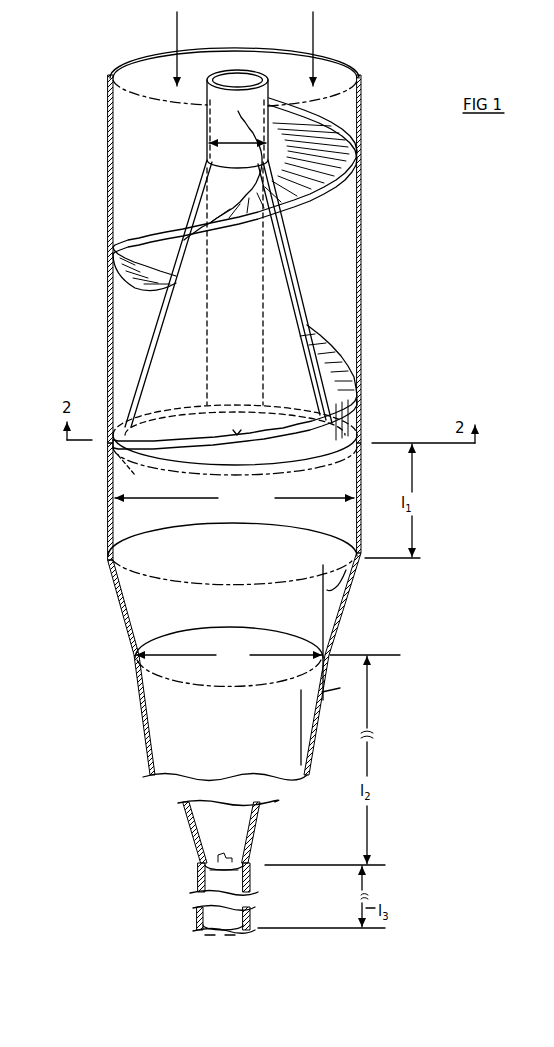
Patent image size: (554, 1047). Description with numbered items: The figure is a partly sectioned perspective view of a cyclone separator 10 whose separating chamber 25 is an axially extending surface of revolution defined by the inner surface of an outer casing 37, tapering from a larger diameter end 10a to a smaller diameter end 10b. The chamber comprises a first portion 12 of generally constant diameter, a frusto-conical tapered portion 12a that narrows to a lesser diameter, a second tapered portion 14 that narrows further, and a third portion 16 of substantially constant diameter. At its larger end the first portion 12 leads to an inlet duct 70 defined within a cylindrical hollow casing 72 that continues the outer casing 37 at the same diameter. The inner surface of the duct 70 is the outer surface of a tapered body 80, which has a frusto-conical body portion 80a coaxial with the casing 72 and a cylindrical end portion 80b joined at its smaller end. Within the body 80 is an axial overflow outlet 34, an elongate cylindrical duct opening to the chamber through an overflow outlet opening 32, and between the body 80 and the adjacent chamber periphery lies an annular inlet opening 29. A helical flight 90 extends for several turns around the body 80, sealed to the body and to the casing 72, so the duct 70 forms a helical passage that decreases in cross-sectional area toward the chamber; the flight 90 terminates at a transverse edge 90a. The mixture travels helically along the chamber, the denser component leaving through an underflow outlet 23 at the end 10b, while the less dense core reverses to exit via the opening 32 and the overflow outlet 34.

The separator 10 is at (367, 177).
The larger diameter end 10a is at (356, 452).
The smaller diameter end 10b is at (243, 920).
The first portion 12 is at (357, 491).
The tapered portion 12a is at (343, 612).
The second tapered portion 14 is at (312, 714).
The third portion 16 is at (251, 880).
The underflow outlet 23 is at (205, 920).
The separating chamber 25 is at (256, 557).
The annular inlet opening 29 is at (102, 495).
The overflow outlet opening 32 is at (235, 443).
The axial overflow outlet 34 is at (245, 80).
The outer casing 37 is at (117, 612).
The inlet duct 70 is at (348, 232).
The hollow casing 72 is at (362, 280).
The tapered body 80 is at (295, 227).
The frusto-conical body portion 80a is at (301, 288).
The cylindrical end portion 80b is at (273, 100).
The helical flight 90 is at (338, 150).
The transverse edge 90a is at (113, 440).